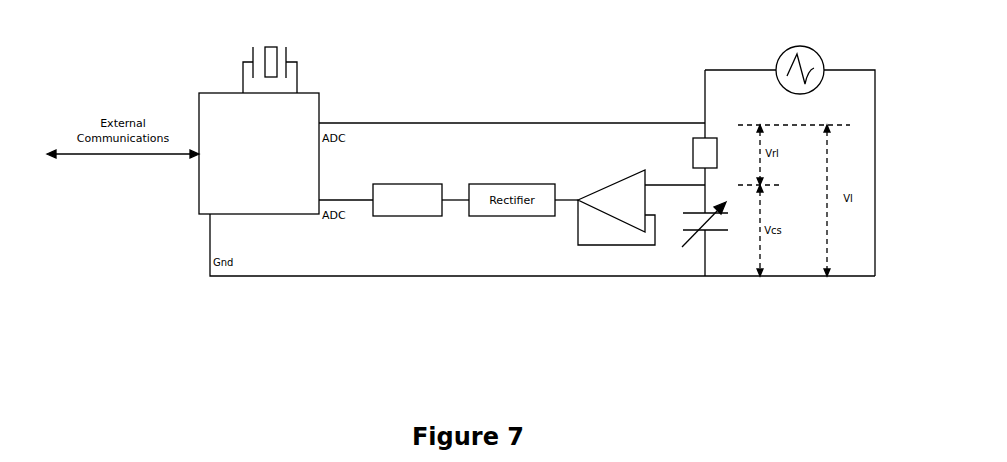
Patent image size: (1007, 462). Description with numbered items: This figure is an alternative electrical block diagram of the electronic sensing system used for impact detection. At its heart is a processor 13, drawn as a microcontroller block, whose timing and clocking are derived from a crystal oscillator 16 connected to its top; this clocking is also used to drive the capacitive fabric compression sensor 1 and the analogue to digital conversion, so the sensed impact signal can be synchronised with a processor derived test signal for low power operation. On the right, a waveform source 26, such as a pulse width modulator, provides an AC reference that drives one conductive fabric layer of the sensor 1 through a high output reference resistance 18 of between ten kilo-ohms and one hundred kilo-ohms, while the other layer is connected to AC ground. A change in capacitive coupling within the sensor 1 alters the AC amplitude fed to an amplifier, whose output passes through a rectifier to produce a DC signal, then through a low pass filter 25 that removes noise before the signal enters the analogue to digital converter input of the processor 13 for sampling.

The capacitive fabric compression sensor 1 is at (692, 228).
The processor 13 is at (216, 184).
The crystal oscillator 16 is at (165, 15).
The high output reference resistance 18 is at (705, 155).
The low pass filter 25 is at (408, 184).
The waveform source 26 is at (802, 47).